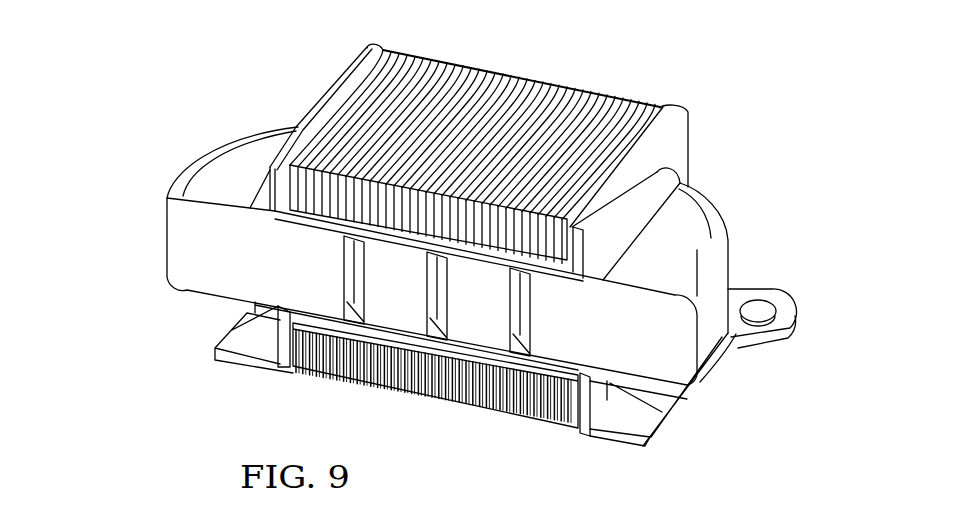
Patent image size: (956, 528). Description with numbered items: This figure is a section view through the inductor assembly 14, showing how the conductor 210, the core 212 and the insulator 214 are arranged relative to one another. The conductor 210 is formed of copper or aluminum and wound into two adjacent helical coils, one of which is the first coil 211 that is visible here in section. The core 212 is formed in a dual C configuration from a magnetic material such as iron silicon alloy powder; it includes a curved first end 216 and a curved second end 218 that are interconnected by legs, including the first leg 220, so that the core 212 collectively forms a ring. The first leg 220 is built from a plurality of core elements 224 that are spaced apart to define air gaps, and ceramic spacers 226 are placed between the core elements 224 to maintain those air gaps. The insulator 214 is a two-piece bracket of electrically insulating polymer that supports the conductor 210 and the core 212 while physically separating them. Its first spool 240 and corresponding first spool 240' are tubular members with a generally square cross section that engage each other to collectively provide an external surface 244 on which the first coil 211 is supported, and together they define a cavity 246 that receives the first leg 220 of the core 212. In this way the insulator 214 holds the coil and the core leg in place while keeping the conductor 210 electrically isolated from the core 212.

The inductor assembly 14 is at (168, 118).
The conductor 210 is at (594, 84).
The first coil 211 is at (503, 78).
The core 212 is at (740, 250).
The insulator 214 is at (700, 133).
The first end 216 is at (193, 265).
The second end 218 is at (673, 357).
The first leg 220 is at (533, 410).
The core elements 224 is at (413, 292).
The ceramic spacers 226 is at (358, 272).
The first spool 240 is at (474, 155).
The first spool 240' is at (671, 167).
The external surface 244 is at (266, 219).
The cavity 246 is at (286, 268).